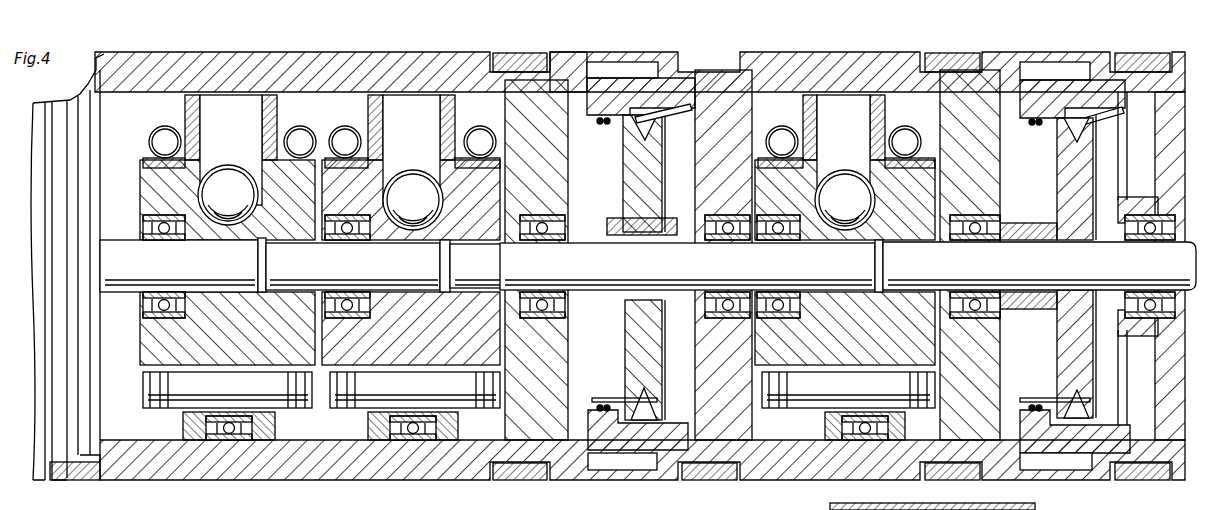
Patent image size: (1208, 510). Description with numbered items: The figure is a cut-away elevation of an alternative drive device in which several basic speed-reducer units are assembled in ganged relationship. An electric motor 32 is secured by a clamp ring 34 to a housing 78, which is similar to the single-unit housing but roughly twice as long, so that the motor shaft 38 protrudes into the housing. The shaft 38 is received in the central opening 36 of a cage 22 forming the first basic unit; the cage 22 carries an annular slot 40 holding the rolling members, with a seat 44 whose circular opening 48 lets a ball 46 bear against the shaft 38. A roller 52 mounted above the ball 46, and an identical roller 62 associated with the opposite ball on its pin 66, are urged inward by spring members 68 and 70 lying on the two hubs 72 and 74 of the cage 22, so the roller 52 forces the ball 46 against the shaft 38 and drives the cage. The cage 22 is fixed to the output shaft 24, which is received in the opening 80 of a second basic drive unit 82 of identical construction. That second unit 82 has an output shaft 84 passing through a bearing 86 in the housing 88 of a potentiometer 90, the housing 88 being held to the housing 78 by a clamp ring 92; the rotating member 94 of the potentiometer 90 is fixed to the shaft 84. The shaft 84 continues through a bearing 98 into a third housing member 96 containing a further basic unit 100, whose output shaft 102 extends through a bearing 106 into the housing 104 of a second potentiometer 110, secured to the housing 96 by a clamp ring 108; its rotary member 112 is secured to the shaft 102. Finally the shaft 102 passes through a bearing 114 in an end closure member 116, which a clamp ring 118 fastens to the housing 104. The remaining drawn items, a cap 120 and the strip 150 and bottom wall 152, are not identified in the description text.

The cage 22 is at (186, 100).
The output shaft 24 is at (366, 266).
The electric motor 32 is at (50, 480).
The clamp ring 34 is at (100, 478).
The central opening 36 is at (220, 292).
The motor shaft 38 is at (185, 266).
The annular slot 40 is at (246, 112).
The seat 44 is at (252, 214).
The ball 46 is at (228, 195).
The circular opening 48 is at (262, 248).
The roller 52 is at (231, 150).
The roller 62 is at (245, 440).
The pin 66 is at (227, 390).
The spring member 68 is at (303, 128).
The spring member 70 is at (170, 128).
The hub 72 is at (320, 156).
The hub 74 is at (145, 156).
The housing 78 is at (322, 62).
The opening 80 is at (406, 290).
The second basic drive unit 82 is at (410, 104).
The output shaft 84 is at (640, 266).
The bearing 86 is at (566, 318).
The potentiometer housing 88 is at (590, 56).
The potentiometer 90 is at (619, 54).
The clamp ring 92 is at (518, 64).
The rotating member 94 is at (622, 172).
The third housing member 96 is at (796, 58).
The bearing 98 is at (700, 336).
The basic unit 100 is at (846, 100).
The output shaft 102 is at (1072, 266).
The housing 104 is at (1018, 58).
The bearing 106 is at (996, 322).
The clamp ring 108 is at (940, 62).
The potentiometer 110 is at (1060, 58).
The rotary member 112 is at (1056, 170).
The bearing 114 is at (1140, 330).
The end closure member 116 is at (1188, 455).
The clamp ring 118 is at (1130, 64).
The cap 120 is at (499, 485).
The base strip 150 is at (773, 504).
The housing bottom wall 152 is at (642, 474).